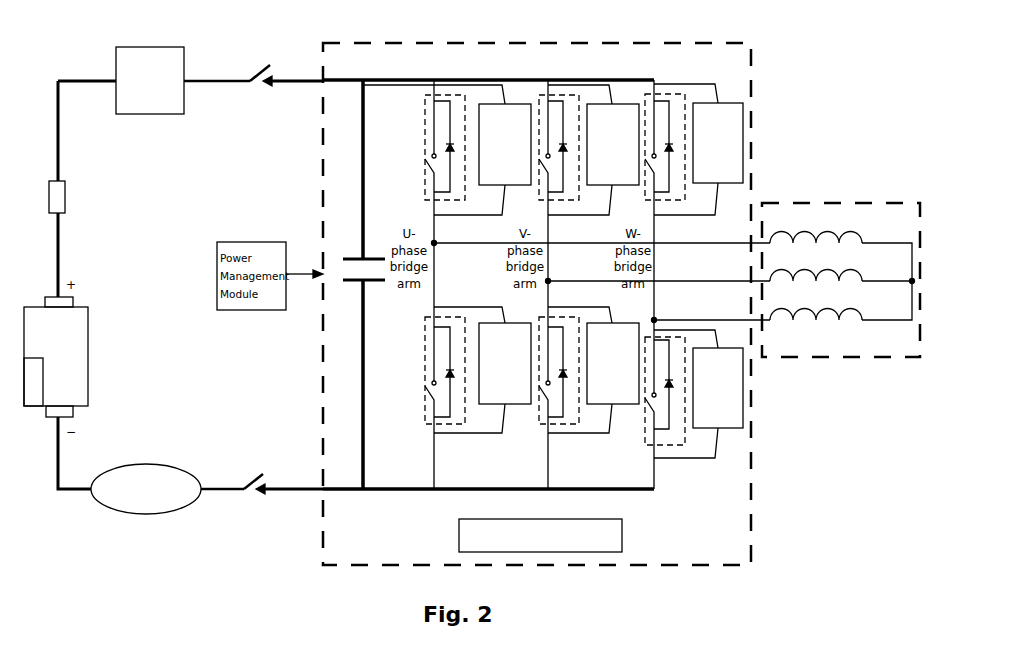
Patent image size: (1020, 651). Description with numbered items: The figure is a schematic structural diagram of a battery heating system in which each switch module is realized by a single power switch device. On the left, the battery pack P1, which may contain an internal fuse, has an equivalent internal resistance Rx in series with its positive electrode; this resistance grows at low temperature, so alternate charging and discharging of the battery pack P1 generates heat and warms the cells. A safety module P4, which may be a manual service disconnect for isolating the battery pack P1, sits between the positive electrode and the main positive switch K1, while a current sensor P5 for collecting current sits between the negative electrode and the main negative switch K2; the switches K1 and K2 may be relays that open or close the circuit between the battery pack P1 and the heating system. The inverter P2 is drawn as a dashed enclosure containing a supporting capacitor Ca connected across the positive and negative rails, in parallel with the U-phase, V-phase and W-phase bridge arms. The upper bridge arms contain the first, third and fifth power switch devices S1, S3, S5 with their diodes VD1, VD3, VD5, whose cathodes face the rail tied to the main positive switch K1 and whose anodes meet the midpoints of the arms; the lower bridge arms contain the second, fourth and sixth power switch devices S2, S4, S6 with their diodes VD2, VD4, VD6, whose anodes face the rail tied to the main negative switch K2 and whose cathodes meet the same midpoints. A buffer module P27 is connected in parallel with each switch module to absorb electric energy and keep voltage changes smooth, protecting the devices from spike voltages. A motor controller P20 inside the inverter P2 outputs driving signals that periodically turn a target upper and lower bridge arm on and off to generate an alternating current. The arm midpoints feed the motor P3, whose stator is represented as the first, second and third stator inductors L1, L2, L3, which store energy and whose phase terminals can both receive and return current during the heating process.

The battery pack P1 is at (56, 357).
The inverter P2 is at (498, 42).
The motor P3 is at (841, 202).
The safety module P4 is at (150, 80).
The current sensor P5 is at (146, 489).
The motor controller P20 is at (540, 535).
The buffer module P27 is at (588, 271).
The equivalent internal resistance Rx is at (68, 197).
The supporting capacitor Ca is at (356, 284).
The main positive switch K1 is at (253, 68).
The main negative switch K2 is at (262, 475).
The first power switch device S1 is at (430, 93).
The second power switch device S2 is at (428, 425).
The third power switch device S3 is at (545, 93).
The fourth power switch device S4 is at (545, 427).
The fifth power switch device S5 is at (651, 93).
The sixth power switch device S6 is at (656, 447).
The diode of the first power switch device VD1 is at (449, 146).
The diode of the second power switch device VD2 is at (449, 372).
The diode of the third power switch device VD3 is at (563, 146).
The diode of the fourth power switch device VD4 is at (563, 372).
The diode of the fifth power switch device VD5 is at (669, 146).
The diode of the sixth power switch device VD6 is at (669, 384).
The first stator inductor L1 is at (816, 228).
The second stator inductor L2 is at (816, 266).
The third stator inductor L3 is at (816, 305).